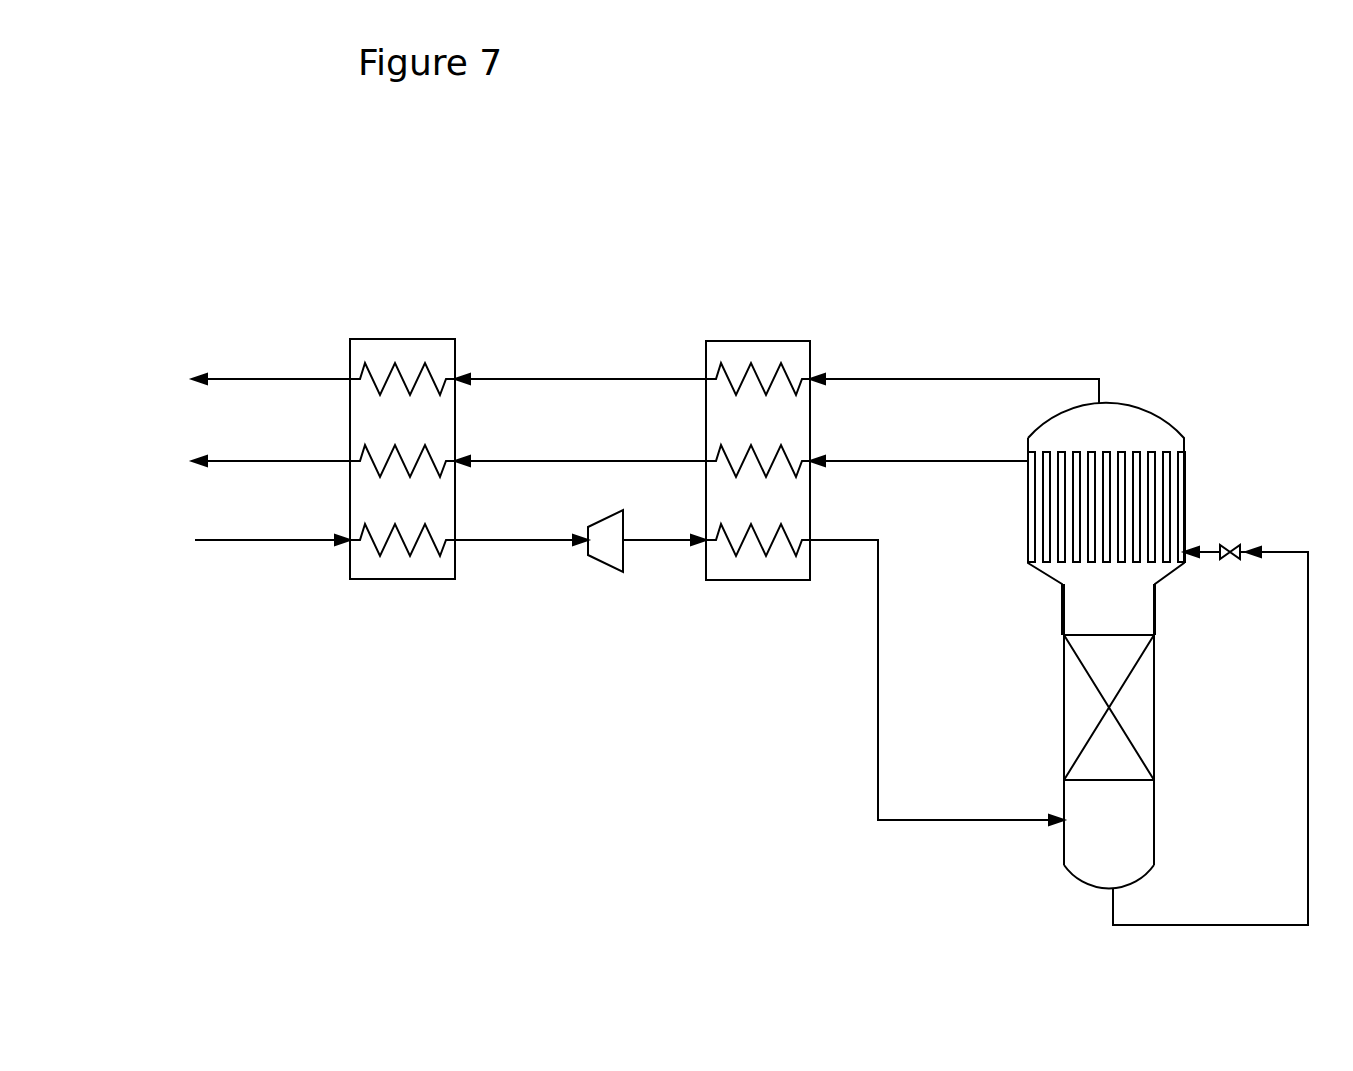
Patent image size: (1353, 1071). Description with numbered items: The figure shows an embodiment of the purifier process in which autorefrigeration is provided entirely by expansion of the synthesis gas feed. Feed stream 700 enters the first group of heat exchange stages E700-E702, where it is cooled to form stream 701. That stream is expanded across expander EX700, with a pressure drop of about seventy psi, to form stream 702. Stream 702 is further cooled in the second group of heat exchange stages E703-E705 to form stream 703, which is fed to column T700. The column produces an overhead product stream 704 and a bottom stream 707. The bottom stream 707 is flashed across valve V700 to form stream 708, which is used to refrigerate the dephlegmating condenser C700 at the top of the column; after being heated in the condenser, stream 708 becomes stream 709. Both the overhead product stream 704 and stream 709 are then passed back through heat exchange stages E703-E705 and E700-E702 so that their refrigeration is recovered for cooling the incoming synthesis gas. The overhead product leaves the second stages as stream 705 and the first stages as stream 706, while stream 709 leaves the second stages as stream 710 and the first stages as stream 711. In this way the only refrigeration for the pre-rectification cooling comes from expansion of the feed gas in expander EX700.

The feed stream 700 is at (242, 540).
The cooled feed stream 701 is at (521, 528).
The expanded stream 702 is at (664, 530).
The column feed stream 703 is at (937, 682).
The overhead product stream 704 is at (954, 375).
The warmed overhead stream 705 is at (580, 366).
The overhead product stream outlet 706 is at (242, 377).
The bottom stream 707 is at (1210, 736).
The flashed bottom stream 708 is at (1209, 546).
The heated refrigerant stream 709 is at (919, 449).
The warmed refrigerant stream 710 is at (580, 449).
The refrigerant stream outlet 711 is at (242, 460).
The heat exchange stages E700-E702 is at (400, 442).
The heat exchange stages E703-E705 is at (758, 442).
The expander EX700 is at (611, 572).
The dephlegmating condenser C700 is at (1170, 482).
The column T700 is at (1064, 685).
The valve V700 is at (1218, 568).